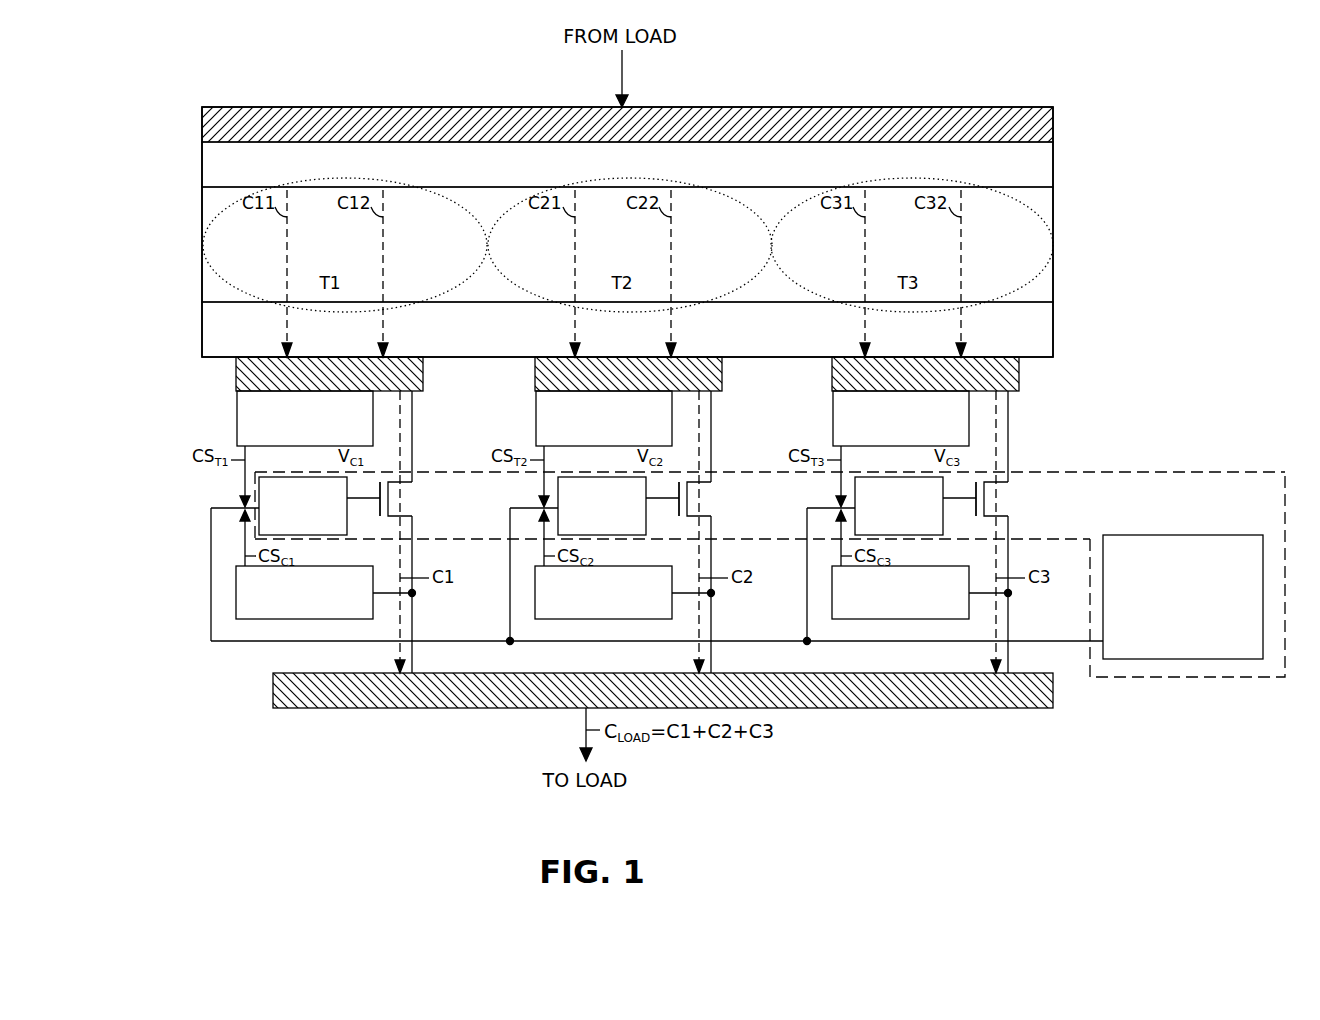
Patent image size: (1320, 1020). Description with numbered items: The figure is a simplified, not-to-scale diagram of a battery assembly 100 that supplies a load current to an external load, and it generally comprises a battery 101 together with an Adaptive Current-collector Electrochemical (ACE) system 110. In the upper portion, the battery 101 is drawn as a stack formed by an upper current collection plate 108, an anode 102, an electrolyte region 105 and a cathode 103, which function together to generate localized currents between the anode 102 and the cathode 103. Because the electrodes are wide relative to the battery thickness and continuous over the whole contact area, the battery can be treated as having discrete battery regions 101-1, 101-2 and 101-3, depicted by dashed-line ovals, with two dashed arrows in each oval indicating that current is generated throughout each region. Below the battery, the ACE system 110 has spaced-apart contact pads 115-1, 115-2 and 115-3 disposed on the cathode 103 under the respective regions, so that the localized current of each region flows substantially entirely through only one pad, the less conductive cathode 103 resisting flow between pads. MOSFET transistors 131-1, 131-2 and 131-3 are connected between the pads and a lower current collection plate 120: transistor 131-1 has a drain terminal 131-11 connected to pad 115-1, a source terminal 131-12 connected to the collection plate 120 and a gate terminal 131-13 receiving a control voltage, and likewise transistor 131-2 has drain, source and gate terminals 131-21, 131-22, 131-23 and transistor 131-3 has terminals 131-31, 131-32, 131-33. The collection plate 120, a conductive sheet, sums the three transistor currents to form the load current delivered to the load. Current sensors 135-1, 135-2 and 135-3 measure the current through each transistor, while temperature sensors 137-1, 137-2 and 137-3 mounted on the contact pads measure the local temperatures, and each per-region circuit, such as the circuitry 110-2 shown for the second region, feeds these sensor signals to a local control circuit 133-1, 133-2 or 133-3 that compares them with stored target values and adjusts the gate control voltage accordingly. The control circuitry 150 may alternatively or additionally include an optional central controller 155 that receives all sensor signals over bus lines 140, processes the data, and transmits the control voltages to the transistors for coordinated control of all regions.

The battery assembly 100 is at (279, 44).
The battery 101 is at (192, 95).
The discrete battery region 101-1 is at (403, 231).
The discrete battery region 101-2 is at (692, 231).
The discrete battery region 101-3 is at (981, 231).
The anode 102 is at (775, 168).
The cathode 103 is at (766, 350).
The electrolyte region 105 is at (744, 290).
The current collector 108 is at (775, 132).
The ACE system 110 is at (167, 375).
The cell control circuit 110-2 is at (736, 415).
The contact pad 115-1 is at (311, 383).
The contact pad 115-2 is at (628, 374).
The contact pad 115-3 is at (925, 374).
The current collection plate 120 is at (587, 701).
The MOSFET transistor 131-1 is at (418, 505).
The drain terminal 131-11 is at (408, 478).
The source terminal 131-12 is at (488, 540).
The gate terminal 131-13 is at (352, 470).
The MOSFET transistor 131-2 is at (715, 499).
The drain terminal 131-21 is at (744, 442).
The source terminal 131-22 is at (745, 593).
The gate terminal 131-23 is at (651, 518).
The MOSFET transistor 131-3 is at (1012, 499).
The drain terminal 131-31 is at (1041, 442).
The source terminal 131-32 is at (1042, 593).
The gate terminal 131-33 is at (948, 518).
The local control circuit 133-1 is at (281, 530).
The local control circuit 133-2 is at (602, 506).
The local control circuit 133-3 is at (899, 506).
The current sensor 135-1 is at (283, 615).
The current sensor 135-2 is at (603, 592).
The current sensor 135-3 is at (900, 592).
The temperature sensor 137-1 is at (283, 441).
The temperature sensor 137-2 is at (604, 418).
The temperature sensor 137-3 is at (901, 418).
The bus lines 140 is at (242, 641).
The control circuitry 150 is at (1189, 494).
The central controller 155 is at (1167, 649).